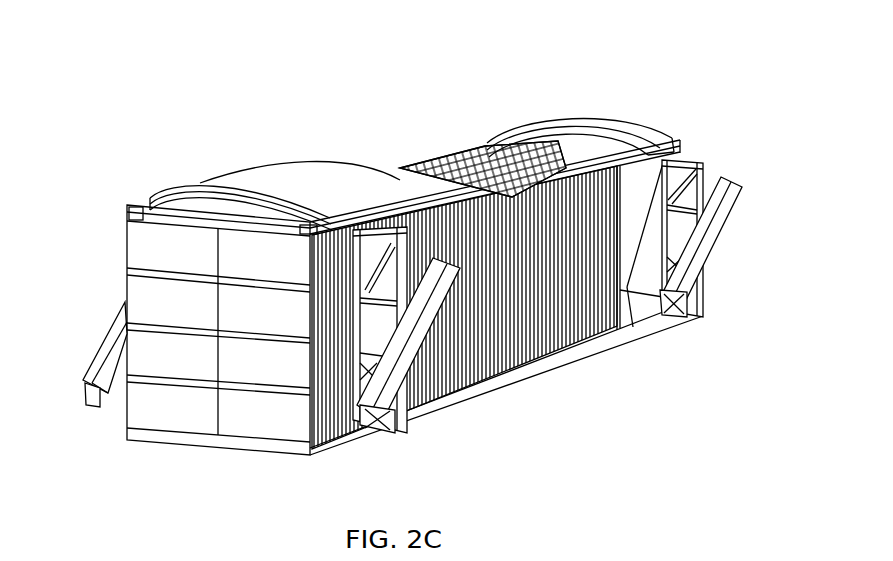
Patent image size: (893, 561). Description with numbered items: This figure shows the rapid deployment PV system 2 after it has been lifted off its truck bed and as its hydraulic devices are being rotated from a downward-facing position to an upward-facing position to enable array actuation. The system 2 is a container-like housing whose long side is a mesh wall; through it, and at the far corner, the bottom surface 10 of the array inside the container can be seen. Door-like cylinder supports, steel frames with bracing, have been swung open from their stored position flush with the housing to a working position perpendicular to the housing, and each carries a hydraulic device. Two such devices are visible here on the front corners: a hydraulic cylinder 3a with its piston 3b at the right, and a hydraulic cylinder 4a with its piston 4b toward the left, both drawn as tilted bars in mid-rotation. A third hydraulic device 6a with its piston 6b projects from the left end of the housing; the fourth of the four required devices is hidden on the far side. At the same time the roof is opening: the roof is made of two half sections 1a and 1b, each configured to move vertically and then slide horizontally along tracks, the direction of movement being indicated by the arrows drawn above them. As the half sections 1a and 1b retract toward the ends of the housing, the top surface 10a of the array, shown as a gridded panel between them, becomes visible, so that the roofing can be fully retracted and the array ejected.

The rapid deployment PV system 2 is at (415, 240).
The roof half section 1a is at (320, 172).
The roof half section 1b is at (590, 130).
The top surface of the array 10a is at (432, 157).
The bottom surface of the array 10 is at (627, 289).
The hydraulic cylinder 3a is at (718, 228).
The piston 3b is at (683, 313).
The hydraulic cylinder 4a is at (417, 345).
The piston 4b is at (378, 420).
The hydraulic device 6a is at (108, 332).
The piston 6b is at (90, 390).